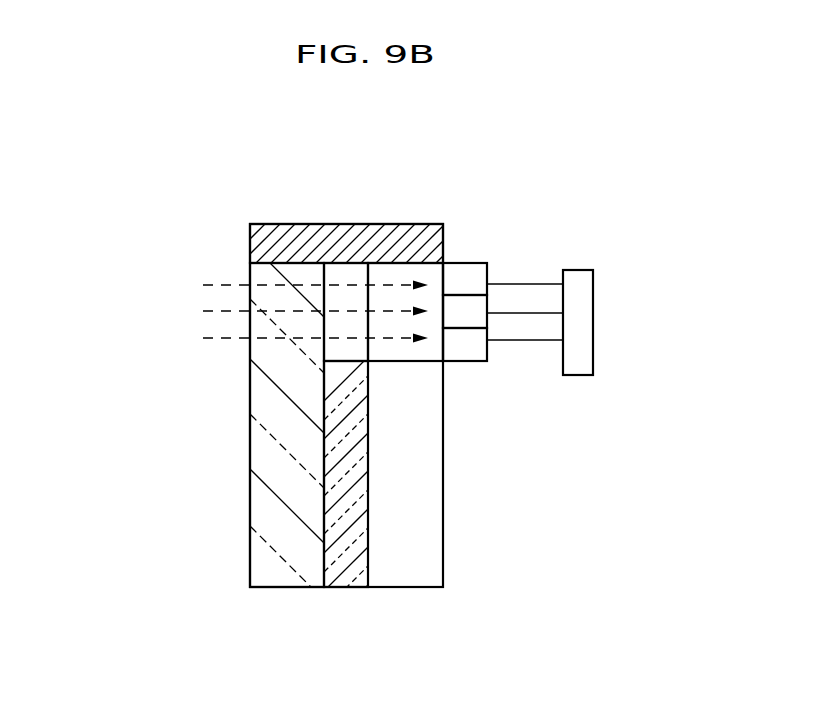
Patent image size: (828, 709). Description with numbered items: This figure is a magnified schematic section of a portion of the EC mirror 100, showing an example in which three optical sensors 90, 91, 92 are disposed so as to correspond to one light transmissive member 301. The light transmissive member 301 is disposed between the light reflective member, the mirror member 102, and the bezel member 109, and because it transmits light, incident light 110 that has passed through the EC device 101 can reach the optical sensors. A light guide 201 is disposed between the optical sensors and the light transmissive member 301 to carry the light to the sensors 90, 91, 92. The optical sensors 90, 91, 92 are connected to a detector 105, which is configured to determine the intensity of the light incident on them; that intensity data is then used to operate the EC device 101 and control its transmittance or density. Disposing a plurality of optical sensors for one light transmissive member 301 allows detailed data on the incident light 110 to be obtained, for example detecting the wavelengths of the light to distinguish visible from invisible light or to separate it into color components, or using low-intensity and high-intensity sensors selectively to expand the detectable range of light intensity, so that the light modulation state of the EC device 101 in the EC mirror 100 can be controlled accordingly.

The EC mirror 100 is at (490, 612).
The EC device 101 is at (275, 487).
The mirror member 102 is at (337, 531).
The bezel member 109 is at (340, 268).
The incident light 110 is at (210, 311).
The light guide 201 is at (388, 262).
The light transmissive member 301 is at (310, 224).
The optical sensor 90 is at (473, 272).
The optical sensor 91 is at (473, 308).
The optical sensor 92 is at (473, 353).
The detector 105 is at (585, 322).